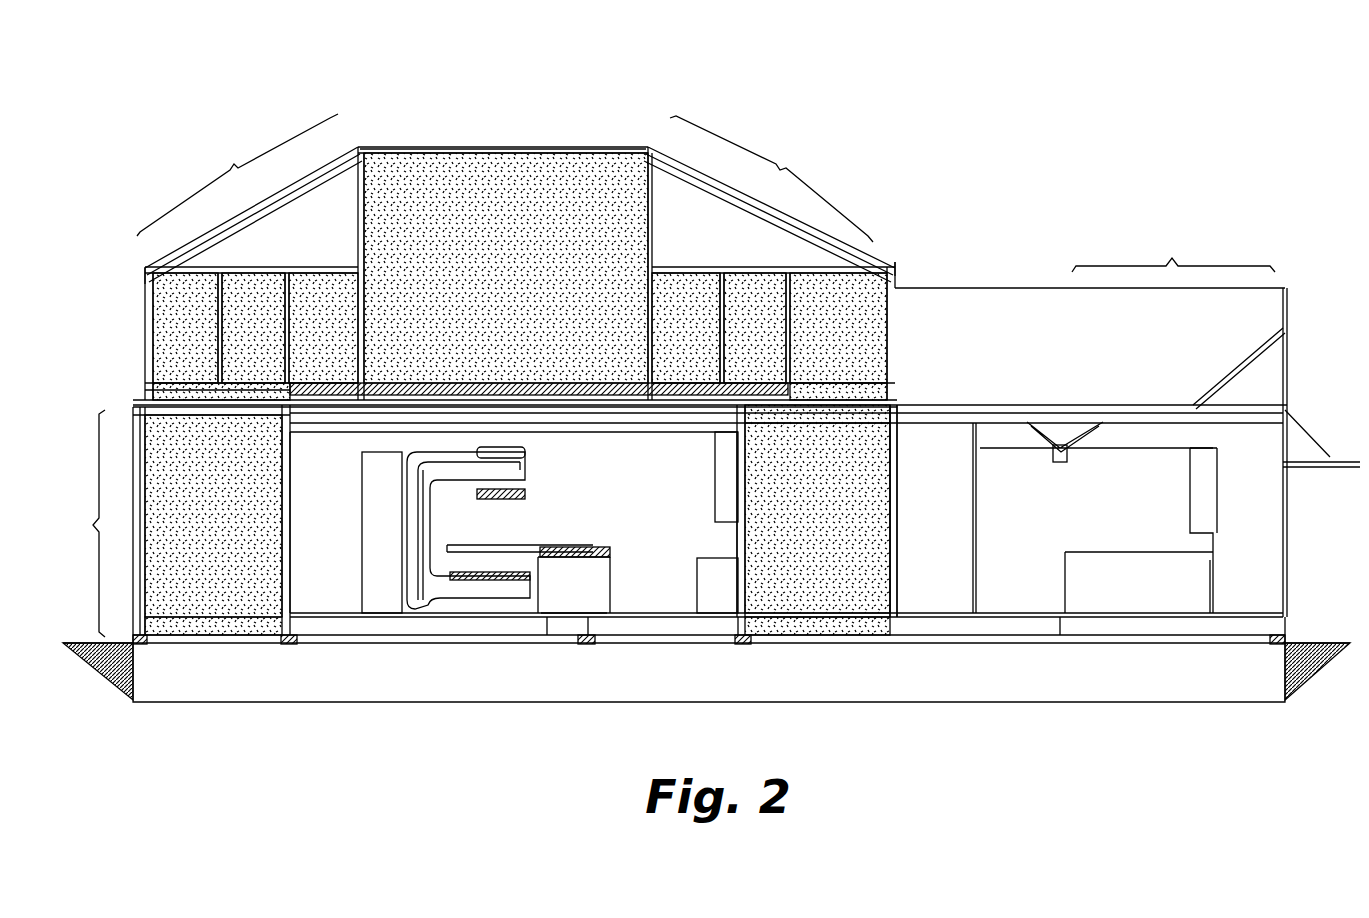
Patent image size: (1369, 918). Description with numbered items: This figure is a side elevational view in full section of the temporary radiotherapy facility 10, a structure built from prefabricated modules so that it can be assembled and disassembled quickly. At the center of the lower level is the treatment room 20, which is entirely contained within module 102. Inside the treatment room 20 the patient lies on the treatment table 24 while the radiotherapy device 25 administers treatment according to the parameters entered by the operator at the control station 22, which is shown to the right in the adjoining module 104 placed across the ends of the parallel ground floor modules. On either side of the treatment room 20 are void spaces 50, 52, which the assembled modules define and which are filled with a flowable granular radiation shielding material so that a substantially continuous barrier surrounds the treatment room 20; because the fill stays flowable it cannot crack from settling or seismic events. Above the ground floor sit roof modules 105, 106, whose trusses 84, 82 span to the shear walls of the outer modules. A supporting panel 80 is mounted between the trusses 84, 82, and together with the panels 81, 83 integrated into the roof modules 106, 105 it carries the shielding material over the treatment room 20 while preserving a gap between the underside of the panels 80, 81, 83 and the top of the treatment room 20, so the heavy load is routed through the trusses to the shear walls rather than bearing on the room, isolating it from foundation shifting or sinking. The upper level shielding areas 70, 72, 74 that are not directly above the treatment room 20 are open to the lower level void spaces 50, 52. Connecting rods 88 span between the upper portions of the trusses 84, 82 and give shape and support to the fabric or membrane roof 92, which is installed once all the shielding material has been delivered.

The temporary radiotherapy facility 10 is at (218, 82).
The treatment room 20 is at (628, 524).
The control station 22 is at (1114, 570).
The treatment table 24 is at (493, 544).
The radiotherapy device 25 is at (525, 455).
The void space 50 is at (803, 538).
The void space 52 is at (201, 528).
The upper level shielding area 70 is at (501, 306).
The upper level shielding area 72 is at (805, 345).
The upper level shielding area 74 is at (236, 336).
The supporting panel 80 is at (562, 385).
The panel 81 is at (686, 328).
The truss 82 is at (654, 204).
The panel 83 is at (323, 328).
The truss 84 is at (356, 220).
The connecting rod 88 is at (500, 150).
The fabric or membrane roof 92 is at (600, 147).
The module 102 is at (78, 523).
The module 104 is at (1088, 421).
The roof module 105 is at (249, 199).
The roof module 106 is at (769, 199).